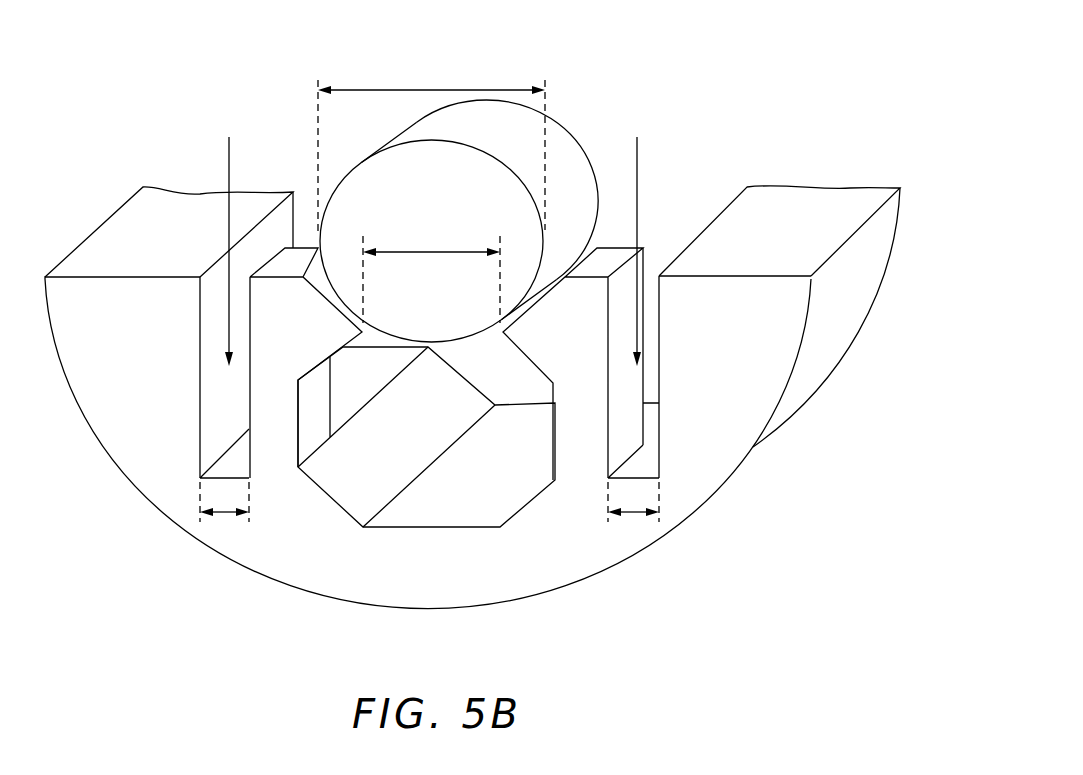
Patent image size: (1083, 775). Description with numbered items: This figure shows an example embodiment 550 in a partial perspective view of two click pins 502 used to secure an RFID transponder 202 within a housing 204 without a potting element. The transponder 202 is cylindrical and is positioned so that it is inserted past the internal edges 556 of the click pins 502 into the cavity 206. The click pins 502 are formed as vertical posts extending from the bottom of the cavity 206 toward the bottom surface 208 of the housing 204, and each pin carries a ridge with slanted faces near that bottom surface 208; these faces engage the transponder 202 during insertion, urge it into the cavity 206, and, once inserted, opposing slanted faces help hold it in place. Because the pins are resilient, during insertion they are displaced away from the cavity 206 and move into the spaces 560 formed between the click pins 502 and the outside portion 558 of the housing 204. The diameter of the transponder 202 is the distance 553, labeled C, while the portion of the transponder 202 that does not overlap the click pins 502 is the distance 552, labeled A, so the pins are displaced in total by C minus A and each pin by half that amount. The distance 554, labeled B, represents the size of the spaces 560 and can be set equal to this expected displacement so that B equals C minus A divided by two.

The RFID transponder 202 is at (411, 190).
The housing 204 is at (147, 499).
The cavity 206 is at (456, 497).
The bottom surface 208 is at (137, 251).
The click pins 502 is at (264, 317).
The example embodiment 550 is at (750, 70).
The distance A 552 is at (441, 257).
The distance C 553 is at (360, 90).
The distance B 554 is at (224, 514).
The internal edges 556 is at (363, 256).
The outside portion 558 is at (117, 317).
The spaces 560 is at (432, 234).